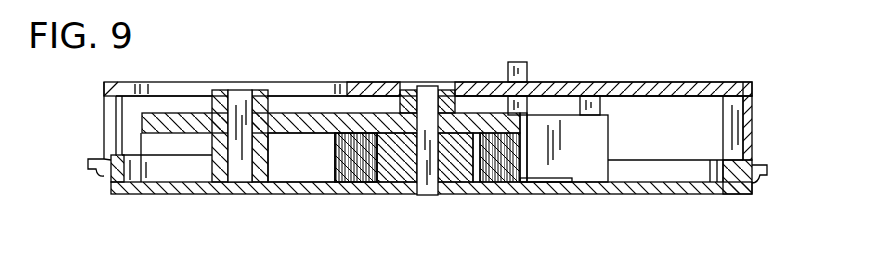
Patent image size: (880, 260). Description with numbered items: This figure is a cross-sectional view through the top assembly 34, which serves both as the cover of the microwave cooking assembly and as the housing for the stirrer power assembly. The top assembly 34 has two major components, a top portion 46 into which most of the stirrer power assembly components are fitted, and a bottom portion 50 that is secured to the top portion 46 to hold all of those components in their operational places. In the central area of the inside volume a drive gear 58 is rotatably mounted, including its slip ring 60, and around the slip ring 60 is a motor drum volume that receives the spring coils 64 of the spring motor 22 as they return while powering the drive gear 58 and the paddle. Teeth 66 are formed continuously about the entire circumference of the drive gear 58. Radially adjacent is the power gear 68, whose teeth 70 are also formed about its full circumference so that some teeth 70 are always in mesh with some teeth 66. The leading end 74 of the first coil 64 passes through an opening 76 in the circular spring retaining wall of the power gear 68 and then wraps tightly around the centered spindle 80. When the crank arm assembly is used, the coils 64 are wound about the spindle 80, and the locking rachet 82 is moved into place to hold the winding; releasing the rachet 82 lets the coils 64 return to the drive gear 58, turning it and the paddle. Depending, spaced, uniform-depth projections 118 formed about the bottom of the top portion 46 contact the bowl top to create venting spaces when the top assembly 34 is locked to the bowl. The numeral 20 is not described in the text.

The housing 20 is at (650, 81).
The spring motor 22 is at (503, 188).
The top assembly 34 is at (552, 80).
The top portion 46 is at (477, 82).
The bottom portion 50 is at (665, 197).
The drive gear 58 is at (380, 102).
The slip ring 60 is at (360, 195).
The spring coils 64 is at (338, 190).
The teeth 66 is at (525, 130).
The power gear 68 is at (197, 111).
The teeth 70 is at (142, 114).
The leading end 74 is at (205, 163).
The opening 76 is at (295, 170).
The centered spindle 80 is at (427, 96).
The locking rachet 82 is at (606, 133).
The projections 118 is at (103, 178).